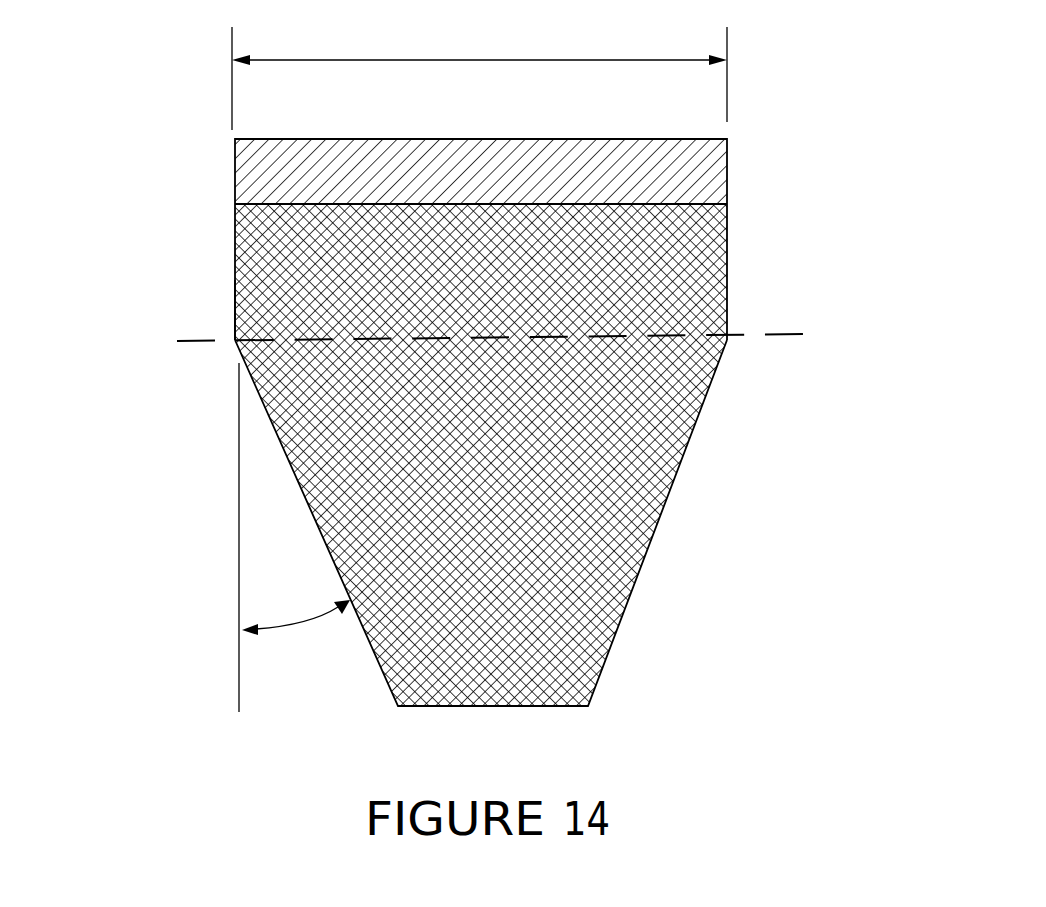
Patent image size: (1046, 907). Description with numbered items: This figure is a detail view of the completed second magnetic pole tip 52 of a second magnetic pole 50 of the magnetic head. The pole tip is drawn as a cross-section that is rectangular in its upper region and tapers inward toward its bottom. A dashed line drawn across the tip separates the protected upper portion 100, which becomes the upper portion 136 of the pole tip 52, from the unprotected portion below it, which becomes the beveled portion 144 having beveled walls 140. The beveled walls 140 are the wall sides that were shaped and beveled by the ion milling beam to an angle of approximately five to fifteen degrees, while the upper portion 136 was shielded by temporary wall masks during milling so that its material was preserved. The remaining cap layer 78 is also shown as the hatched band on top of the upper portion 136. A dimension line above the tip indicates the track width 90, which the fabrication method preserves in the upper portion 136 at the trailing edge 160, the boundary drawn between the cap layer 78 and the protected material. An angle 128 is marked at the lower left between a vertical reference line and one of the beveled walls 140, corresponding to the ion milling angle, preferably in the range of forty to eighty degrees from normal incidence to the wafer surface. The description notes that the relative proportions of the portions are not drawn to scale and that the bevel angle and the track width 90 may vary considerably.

The second magnetic pole 50 is at (166, 134).
The second magnetic pole tip 52 is at (150, 246).
The cap layer 78 is at (717, 168).
The track width 90 is at (460, 61).
The protected upper portion 100 is at (727, 277).
The angle 128 is at (305, 632).
The upper portion 136 is at (224, 312).
The beveled walls 140 is at (283, 443).
The beveled portion 144 is at (732, 477).
The trailing edge 160 is at (475, 203).